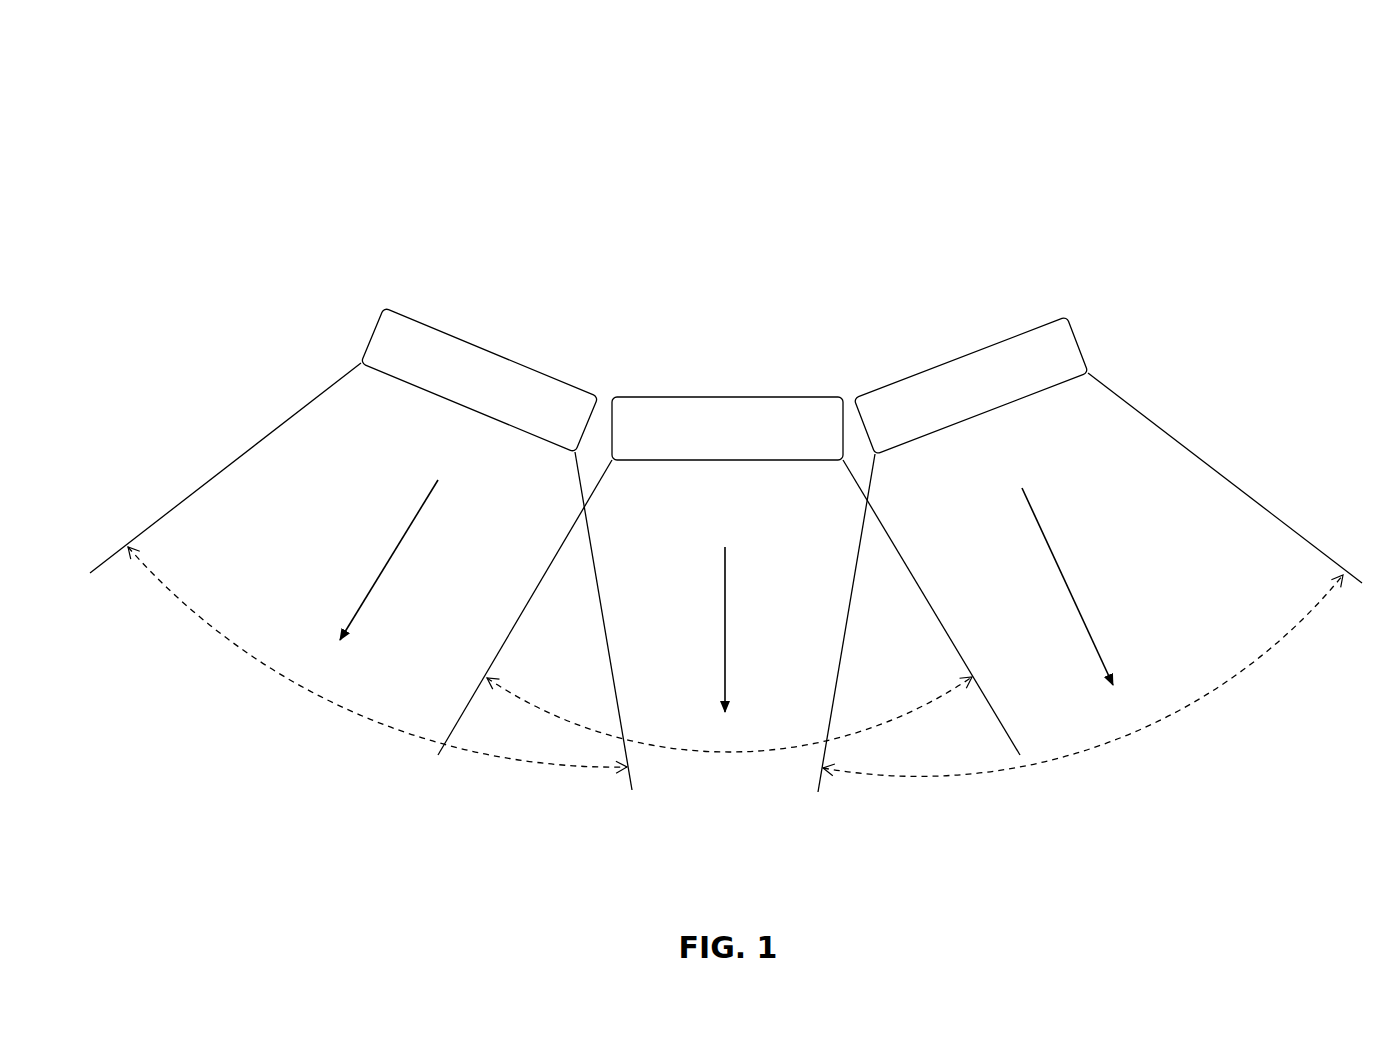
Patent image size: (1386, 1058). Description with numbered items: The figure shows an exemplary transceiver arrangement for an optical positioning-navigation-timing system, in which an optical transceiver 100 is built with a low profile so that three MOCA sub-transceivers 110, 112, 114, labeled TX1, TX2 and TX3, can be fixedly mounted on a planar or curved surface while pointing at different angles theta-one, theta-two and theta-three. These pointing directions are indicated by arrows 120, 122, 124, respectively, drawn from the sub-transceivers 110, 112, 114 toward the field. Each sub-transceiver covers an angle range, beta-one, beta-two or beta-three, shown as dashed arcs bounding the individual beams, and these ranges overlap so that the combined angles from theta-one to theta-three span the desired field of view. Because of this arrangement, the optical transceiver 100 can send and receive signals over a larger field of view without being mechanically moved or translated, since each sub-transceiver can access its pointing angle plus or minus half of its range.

The optical transceiver 100 is at (330, 228).
The sub-transceiver 110 is at (424, 322).
The sub-transceiver 112 is at (663, 397).
The sub-transceiver 114 is at (1053, 322).
The arrow 120 is at (407, 528).
The arrow 122 is at (725, 567).
The arrow 124 is at (1075, 581).